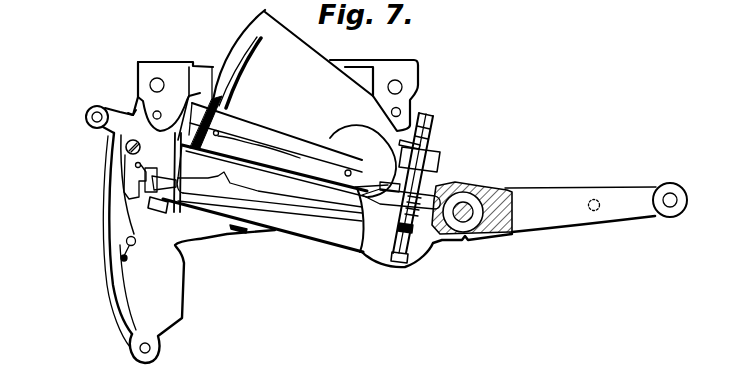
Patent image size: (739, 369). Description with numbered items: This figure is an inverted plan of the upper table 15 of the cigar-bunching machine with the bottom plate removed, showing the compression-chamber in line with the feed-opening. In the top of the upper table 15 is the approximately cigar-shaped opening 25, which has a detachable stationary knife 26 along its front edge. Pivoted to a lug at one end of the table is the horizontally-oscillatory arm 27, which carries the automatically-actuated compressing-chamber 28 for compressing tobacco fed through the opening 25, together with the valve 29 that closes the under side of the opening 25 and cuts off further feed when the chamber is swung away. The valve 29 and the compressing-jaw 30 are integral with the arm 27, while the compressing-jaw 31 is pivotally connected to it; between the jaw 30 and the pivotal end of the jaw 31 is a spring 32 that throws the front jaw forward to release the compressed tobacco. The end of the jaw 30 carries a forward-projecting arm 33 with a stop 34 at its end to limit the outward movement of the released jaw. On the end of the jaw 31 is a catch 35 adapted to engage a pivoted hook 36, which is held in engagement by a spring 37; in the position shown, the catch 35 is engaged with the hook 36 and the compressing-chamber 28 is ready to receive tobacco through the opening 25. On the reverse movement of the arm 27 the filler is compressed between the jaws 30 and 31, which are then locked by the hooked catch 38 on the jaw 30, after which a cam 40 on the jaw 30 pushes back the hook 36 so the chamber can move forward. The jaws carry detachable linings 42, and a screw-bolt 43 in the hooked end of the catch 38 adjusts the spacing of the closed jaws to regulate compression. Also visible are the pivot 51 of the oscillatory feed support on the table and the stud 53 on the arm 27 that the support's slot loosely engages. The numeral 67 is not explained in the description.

The upper table 15 is at (192, 66).
The cigar-shaped opening 25 is at (272, 171).
The stationary knife 26 is at (272, 198).
The oscillatory arm 27 is at (559, 202).
The compressing-chamber 28 is at (312, 166).
The valve 29 is at (304, 103).
The compressing-jaw 30 is at (275, 131).
The compressing-jaw 31 is at (263, 220).
The spring 32 is at (442, 260).
The forward-projecting arm 33 is at (148, 106).
The stop 34 is at (166, 212).
The catch 35 is at (164, 184).
The pivoted hook 36 is at (124, 167).
The spring 37 is at (122, 221).
The hooked catch 38 is at (434, 134).
The cam 40 is at (133, 115).
The detachable linings 42 is at (269, 169).
The screw-bolt 43 is at (394, 256).
The pivot 51 is at (466, 206).
The stud 53 is at (597, 198).
The eye lug 67 is at (85, 121).